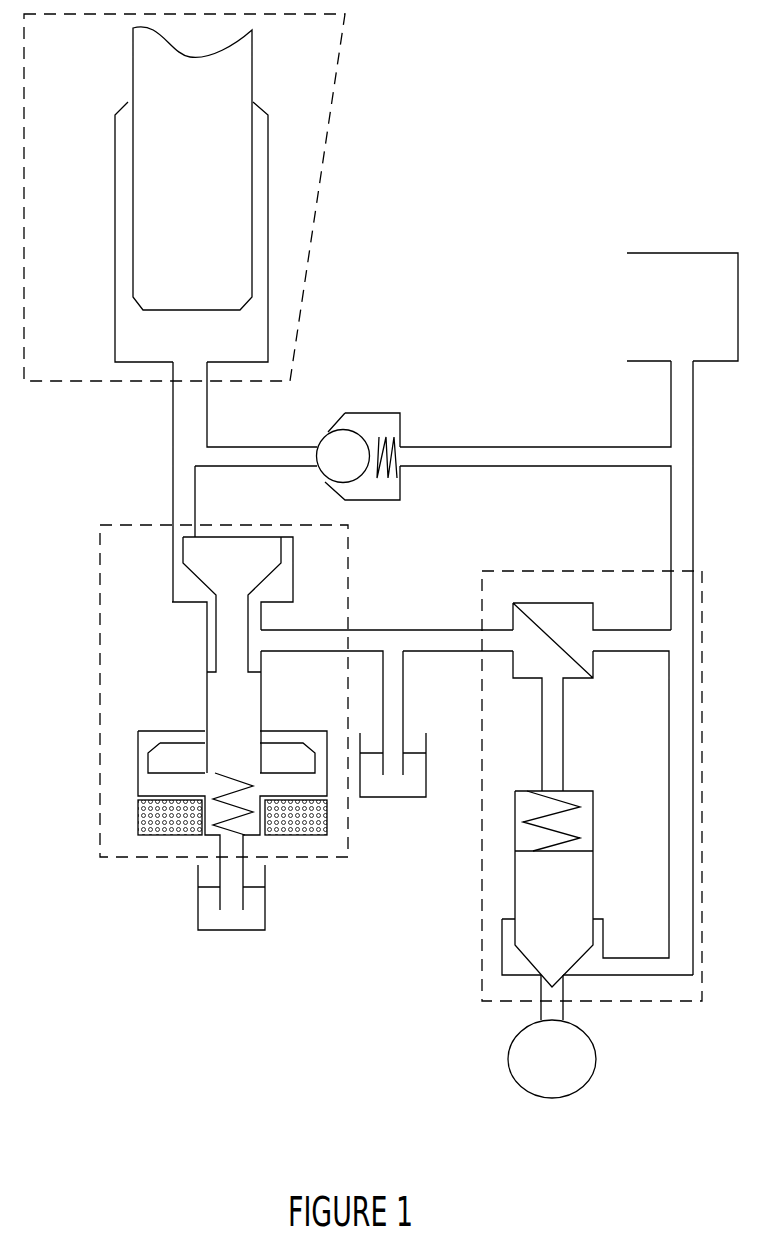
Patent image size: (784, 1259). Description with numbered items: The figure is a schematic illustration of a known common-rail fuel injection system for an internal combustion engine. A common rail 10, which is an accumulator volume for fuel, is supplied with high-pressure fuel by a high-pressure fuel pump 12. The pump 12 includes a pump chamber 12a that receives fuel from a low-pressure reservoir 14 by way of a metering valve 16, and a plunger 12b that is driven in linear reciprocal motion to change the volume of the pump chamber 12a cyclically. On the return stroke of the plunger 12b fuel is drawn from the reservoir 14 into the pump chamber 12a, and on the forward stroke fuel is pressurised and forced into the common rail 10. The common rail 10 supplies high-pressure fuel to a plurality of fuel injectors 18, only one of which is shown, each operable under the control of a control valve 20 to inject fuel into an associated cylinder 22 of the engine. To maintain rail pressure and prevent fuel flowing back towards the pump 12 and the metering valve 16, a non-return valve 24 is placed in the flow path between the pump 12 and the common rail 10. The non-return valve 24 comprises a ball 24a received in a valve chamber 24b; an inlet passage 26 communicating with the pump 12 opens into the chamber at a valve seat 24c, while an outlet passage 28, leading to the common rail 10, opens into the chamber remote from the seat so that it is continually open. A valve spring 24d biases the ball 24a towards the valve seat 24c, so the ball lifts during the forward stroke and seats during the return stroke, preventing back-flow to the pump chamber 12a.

The common rail 10 is at (697, 315).
The high-pressure fuel pump 12 is at (336, 152).
The pump chamber 12a is at (125, 338).
The plunger 12b is at (150, 172).
The reservoir 14 is at (232, 925).
The metering valve 16 is at (98, 688).
The fuel injector 18 is at (631, 816).
The control valve 20 is at (545, 603).
The cylinder 22 is at (567, 1081).
The non-return valve 24 is at (365, 430).
The ball 24a is at (337, 452).
The valve chamber 24b is at (387, 427).
The valve seat 24c is at (332, 485).
The valve spring 24d is at (395, 467).
The inlet passage 26 is at (250, 453).
The outlet passage 28 is at (505, 450).